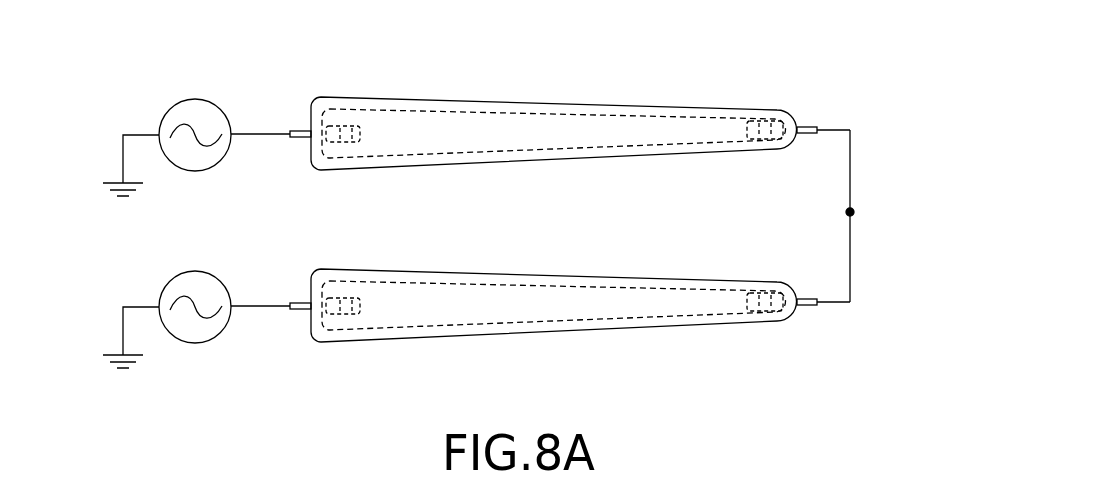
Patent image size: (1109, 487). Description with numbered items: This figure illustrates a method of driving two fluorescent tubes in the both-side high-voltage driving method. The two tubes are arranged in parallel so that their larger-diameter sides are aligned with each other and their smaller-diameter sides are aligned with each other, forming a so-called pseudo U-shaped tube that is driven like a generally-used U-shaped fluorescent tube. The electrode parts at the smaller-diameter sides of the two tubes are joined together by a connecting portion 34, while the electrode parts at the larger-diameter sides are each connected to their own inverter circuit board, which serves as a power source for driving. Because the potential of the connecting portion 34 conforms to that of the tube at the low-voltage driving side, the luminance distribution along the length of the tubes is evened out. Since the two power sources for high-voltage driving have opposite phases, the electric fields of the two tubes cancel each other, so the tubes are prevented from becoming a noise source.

The connecting portion 34 is at (854, 212).